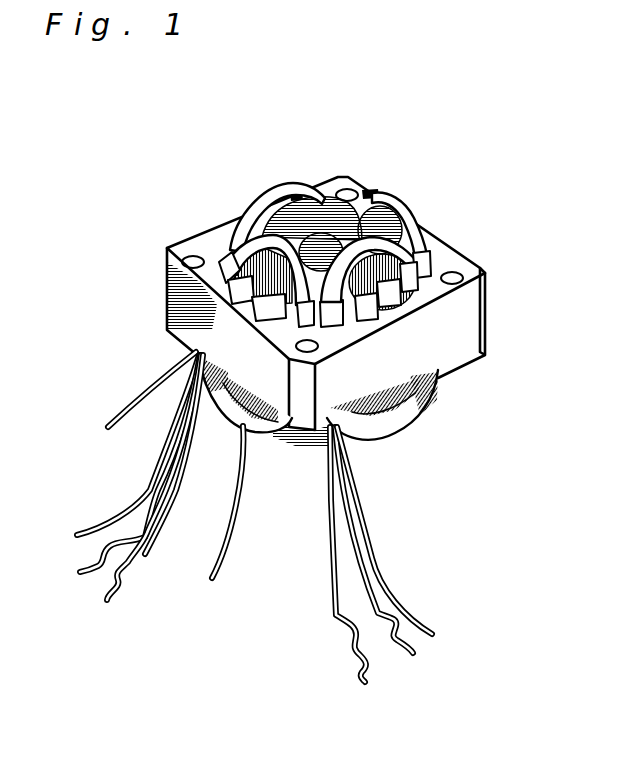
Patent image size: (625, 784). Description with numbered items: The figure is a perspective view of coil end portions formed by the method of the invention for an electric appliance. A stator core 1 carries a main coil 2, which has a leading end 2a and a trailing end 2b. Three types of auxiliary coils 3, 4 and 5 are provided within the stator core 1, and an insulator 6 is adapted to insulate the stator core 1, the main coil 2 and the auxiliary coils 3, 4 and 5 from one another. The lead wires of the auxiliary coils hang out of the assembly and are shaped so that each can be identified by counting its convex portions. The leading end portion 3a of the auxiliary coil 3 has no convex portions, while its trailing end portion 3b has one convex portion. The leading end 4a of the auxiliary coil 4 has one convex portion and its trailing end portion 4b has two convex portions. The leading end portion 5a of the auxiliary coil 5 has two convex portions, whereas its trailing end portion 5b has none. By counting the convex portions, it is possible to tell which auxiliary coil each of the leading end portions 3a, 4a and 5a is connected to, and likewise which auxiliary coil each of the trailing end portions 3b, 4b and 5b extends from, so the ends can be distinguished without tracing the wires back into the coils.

The stator core 1 is at (208, 242).
The main coil 2 is at (335, 207).
The auxiliary coil 3 is at (383, 196).
The auxiliary coil 4 is at (409, 209).
The auxiliary coil 5 is at (417, 208).
The insulator 6 is at (400, 303).
The leading end 2a is at (245, 505).
The trailing end 2b is at (118, 418).
The leading end portion 3a is at (424, 627).
The trailing end portion 3b is at (144, 558).
The leading end 4a is at (407, 653).
The trailing end portion 4b is at (161, 530).
The leading end portion 5a is at (337, 612).
The trailing end portion 5b is at (122, 520).